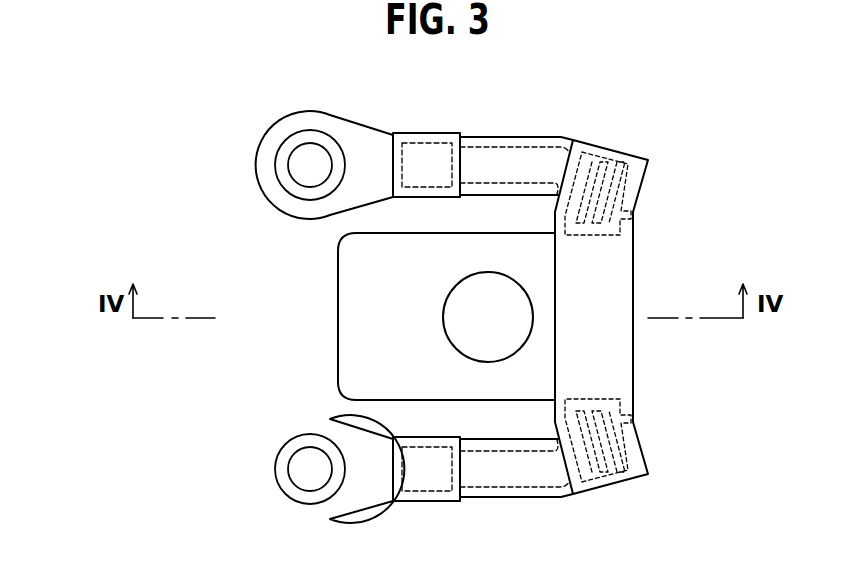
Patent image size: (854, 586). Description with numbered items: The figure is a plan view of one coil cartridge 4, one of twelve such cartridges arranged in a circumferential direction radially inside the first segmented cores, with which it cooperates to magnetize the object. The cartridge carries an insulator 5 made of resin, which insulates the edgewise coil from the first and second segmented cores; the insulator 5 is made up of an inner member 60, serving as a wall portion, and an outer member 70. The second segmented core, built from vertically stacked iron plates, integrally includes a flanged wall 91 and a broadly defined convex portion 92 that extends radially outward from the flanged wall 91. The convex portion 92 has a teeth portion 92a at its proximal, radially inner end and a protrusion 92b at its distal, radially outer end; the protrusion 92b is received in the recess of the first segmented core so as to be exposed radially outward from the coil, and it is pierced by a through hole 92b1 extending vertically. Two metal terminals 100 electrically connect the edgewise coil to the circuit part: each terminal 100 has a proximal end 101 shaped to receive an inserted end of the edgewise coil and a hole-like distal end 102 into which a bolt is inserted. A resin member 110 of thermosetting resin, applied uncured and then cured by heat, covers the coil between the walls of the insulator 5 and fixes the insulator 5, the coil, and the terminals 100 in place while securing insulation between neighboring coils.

The coil cartridge 4 is at (696, 173).
The insulator 5 is at (667, 100).
The inner member 60 is at (582, 142).
The outer member 70 is at (598, 317).
The flanged wall 91 is at (633, 268).
The convex portion 92 is at (257, 229).
The teeth portion 92a is at (583, 285).
The protrusion 92b is at (363, 318).
The through hole 92b1 is at (466, 350).
The terminal 100 is at (249, 141).
The proximal end 101 is at (429, 133).
The distal end 102 is at (254, 177).
The resin member 110 is at (612, 490).